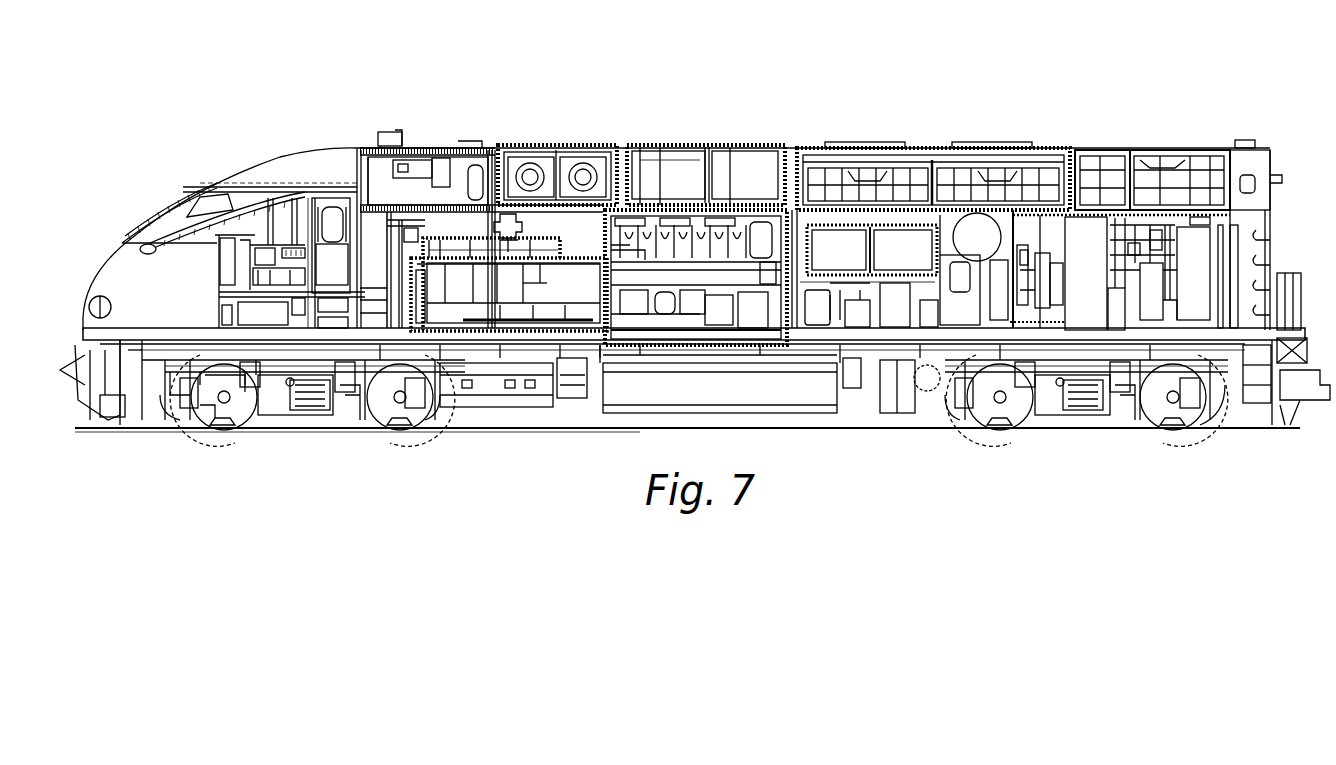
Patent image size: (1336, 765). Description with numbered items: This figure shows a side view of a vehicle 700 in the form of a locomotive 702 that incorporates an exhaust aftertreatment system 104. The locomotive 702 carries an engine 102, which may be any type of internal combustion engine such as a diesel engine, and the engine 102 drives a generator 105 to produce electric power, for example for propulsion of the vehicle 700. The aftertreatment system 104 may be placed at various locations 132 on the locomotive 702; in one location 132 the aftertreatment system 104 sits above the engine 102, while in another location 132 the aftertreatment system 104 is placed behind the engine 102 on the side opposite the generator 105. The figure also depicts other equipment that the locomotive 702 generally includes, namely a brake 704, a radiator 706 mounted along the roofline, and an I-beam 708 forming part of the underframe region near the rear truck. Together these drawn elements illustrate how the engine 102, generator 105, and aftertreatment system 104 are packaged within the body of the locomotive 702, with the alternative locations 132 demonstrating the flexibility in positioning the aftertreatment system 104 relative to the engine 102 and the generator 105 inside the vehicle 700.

The vehicle 700 is at (195, 150).
The brake 704 is at (540, 147).
The aftertreatment system 104 is at (703, 158).
The location 132 is at (738, 138).
The radiator 706 is at (905, 105).
The locomotive 702 is at (1013, 105).
The generator 105 is at (493, 337).
The engine 102 is at (695, 345).
The I-beam 708 is at (1048, 393).